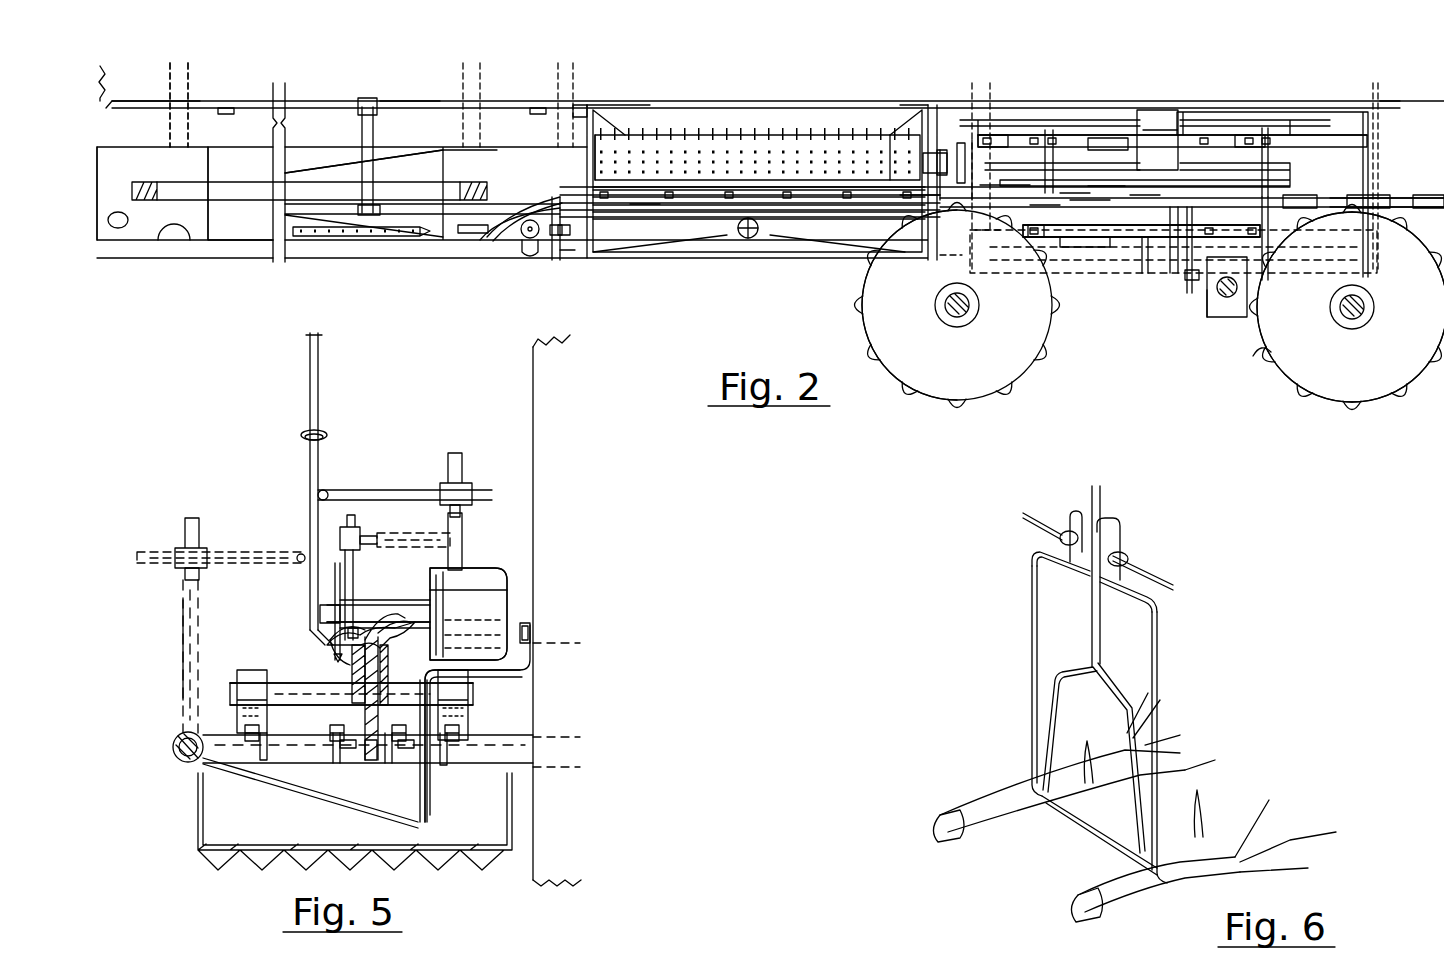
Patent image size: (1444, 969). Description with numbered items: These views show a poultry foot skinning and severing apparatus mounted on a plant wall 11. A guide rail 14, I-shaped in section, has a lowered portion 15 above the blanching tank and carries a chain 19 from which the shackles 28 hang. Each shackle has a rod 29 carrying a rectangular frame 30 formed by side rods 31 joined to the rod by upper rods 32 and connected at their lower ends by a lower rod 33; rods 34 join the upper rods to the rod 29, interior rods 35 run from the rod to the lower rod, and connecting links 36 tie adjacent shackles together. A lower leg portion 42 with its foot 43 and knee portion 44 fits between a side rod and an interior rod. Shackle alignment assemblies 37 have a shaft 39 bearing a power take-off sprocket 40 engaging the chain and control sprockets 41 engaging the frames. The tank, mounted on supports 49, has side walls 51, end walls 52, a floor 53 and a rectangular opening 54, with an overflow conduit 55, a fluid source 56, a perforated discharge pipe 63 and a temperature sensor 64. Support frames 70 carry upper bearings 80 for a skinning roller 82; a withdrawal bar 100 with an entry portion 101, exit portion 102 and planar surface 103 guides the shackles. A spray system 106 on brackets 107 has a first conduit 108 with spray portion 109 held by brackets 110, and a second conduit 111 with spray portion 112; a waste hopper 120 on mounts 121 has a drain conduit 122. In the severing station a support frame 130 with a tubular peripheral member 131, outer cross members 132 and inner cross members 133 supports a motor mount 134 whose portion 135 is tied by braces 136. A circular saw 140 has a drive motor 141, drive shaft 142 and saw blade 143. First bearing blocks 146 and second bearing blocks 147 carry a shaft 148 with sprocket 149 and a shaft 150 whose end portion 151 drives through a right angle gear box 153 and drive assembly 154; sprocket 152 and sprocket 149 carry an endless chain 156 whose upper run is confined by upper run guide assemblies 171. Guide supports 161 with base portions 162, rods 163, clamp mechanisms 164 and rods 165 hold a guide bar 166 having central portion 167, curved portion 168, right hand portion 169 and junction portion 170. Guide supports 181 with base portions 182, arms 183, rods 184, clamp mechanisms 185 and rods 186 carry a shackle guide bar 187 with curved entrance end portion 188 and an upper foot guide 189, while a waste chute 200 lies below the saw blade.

In FIG. 2, the wall 11 is at (1400, 108).
In FIG. 5, the wall 11 is at (533, 430).
In FIG. 2, the guide rail 14 is at (173, 184).
In FIG. 2, the lowered portion 15 is at (237, 193).
In FIG. 2, the chain 19 is at (1381, 198).
In FIG. 2, the shackle 28 is at (836, 202).
In FIG. 5, the rod 29 is at (320, 364).
In FIG. 6, the rod 29 is at (1092, 625).
In FIG. 6, the frame 30 is at (1031, 629).
In FIG. 6, the side rod 31 is at (1155, 629).
In FIG. 6, the upper rod 32 is at (1079, 570).
In FIG. 6, the lower rod 33 is at (1077, 828).
In FIG. 6, the rod 34 is at (1071, 508).
In FIG. 6, the interior rod 35 is at (1121, 729).
In FIG. 6, the connecting link 36 is at (1028, 526).
In FIG. 2, the shackle alignment assembly 37 is at (1002, 393).
In FIG. 2, the shaft 39 is at (1345, 312).
In FIG. 2, the power take-off sprocket 40 is at (1368, 386).
In FIG. 2, the control sprocket 41 is at (1261, 360).
In FIG. 6, the lower leg portion 42 is at (1008, 793).
In FIG. 5, the foot 43 is at (384, 633).
In FIG. 6, the foot 43 is at (1181, 729).
In FIG. 6, the knee portion 44 is at (970, 832).
In FIG. 2, the support 49 is at (190, 108).
In FIG. 2, the side wall 51 is at (222, 146).
In FIG. 2, the end wall 52 is at (97, 150).
In FIG. 2, the floor 53 is at (316, 170).
In FIG. 2, the rectangular opening 54 is at (170, 240).
In FIG. 2, the overflow conduit 55 is at (118, 228).
In FIG. 2, the source 56 is at (522, 238).
In FIG. 2, the perforated discharge pipe 63 is at (372, 237).
In FIG. 2, the temperature sensor 64 is at (463, 234).
In FIG. 2, the support frame 70 is at (572, 240).
In FIG. 2, the upper bearings 80 is at (942, 150).
In FIG. 2, the skinning roller 82 is at (776, 135).
In FIG. 2, the withdrawal bar 100 is at (670, 187).
In FIG. 2, the entry portion 101 is at (560, 182).
In FIG. 2, the exit portion 102 is at (918, 198).
In FIG. 2, the planar surface 103 is at (736, 197).
In FIG. 2, the spray system 106 is at (366, 98).
In FIG. 2, the bracket 107 is at (228, 114).
In FIG. 2, the first conduit 108 is at (405, 101).
In FIG. 2, the spray portion 109 is at (746, 186).
In FIG. 2, the bracket 110 is at (888, 130).
In FIG. 2, the second conduit 111 is at (392, 205).
In FIG. 2, the spray portion 112 is at (694, 212).
In FIG. 2, the waste hopper 120 is at (749, 239).
In FIG. 2, the mount 121 is at (630, 106).
In FIG. 2, the drain conduit 122 is at (757, 236).
In FIG. 2, the support frame 130 is at (1137, 315).
In FIG. 5, the support frame 130 is at (155, 723).
In FIG. 2, the tubular peripheral member 131 is at (1141, 284).
In FIG. 5, the tubular peripheral member 131 is at (174, 757).
In FIG. 2, the outer angle iron cross member 132 is at (1108, 140).
In FIG. 5, the outer angle iron cross member 132 is at (267, 760).
In FIG. 5, the inner angle iron cross member 133 is at (343, 750).
In FIG. 5, the motor mount 134 is at (519, 675).
In FIG. 5, the portion 135 is at (428, 815).
In FIG. 2, the brace 136 is at (1133, 252).
In FIG. 5, the brace 136 is at (275, 779).
In FIG. 5, the circular saw 140 is at (518, 604).
In FIG. 5, the drive motor 141 is at (480, 610).
In FIG. 5, the drive shaft 142 is at (413, 606).
In FIG. 2, the saw blade 143 is at (1138, 198).
In FIG. 5, the saw blade 143 is at (335, 584).
In FIG. 2, the first bearing blocks 146 is at (1040, 150).
In FIG. 5, the first bearing blocks 146 is at (257, 670).
In FIG. 2, the second bearing blocks 147 is at (1218, 140).
In FIG. 2, the shaft 148 is at (1018, 160).
In FIG. 5, the shaft 148 is at (292, 697).
In FIG. 2, the sprocket 149 is at (980, 190).
In FIG. 5, the sprocket 149 is at (378, 745).
In FIG. 2, the shaft 150 is at (1228, 164).
In FIG. 2, the end portion 151 is at (1214, 307).
In FIG. 2, the sprocket 152 is at (1250, 142).
In FIG. 2, the right angle gear box 153 is at (1215, 313).
In FIG. 2, the drive assembly 154 is at (1227, 297).
In FIG. 5, the endless chain 156 is at (368, 752).
In FIG. 2, the guide support 161 is at (575, 245).
In FIG. 5, the guide support 161 is at (180, 633).
In FIG. 5, the base portion 162 is at (183, 604).
In FIG. 5, the rod 163 is at (198, 578).
In FIG. 5, the clamp mechanism 164 is at (183, 546).
In FIG. 5, the rod 165 is at (254, 553).
In FIG. 2, the guide bar 166 is at (645, 208).
In FIG. 5, the guide bar 166 is at (300, 556).
In FIG. 2, the central portion 167 is at (768, 202).
In FIG. 2, the curved portion 168 is at (490, 238).
In FIG. 2, the right hand portion 169 is at (1046, 208).
In FIG. 2, the junction portion 170 is at (988, 222).
In FIG. 2, the upper run guide assembly 171 is at (1093, 186).
In FIG. 5, the upper run guide assembly 171 is at (356, 665).
In FIG. 2, the guide support 181 is at (1050, 143).
In FIG. 5, the base portion 182 is at (463, 552).
In FIG. 5, the arm 183 is at (430, 545).
In FIG. 5, the rod 184 is at (360, 538).
In FIG. 5, the clamp mechanism 185 is at (472, 484).
In FIG. 5, the rod 186 is at (404, 491).
In FIG. 2, the shackle guide bar 187 is at (1072, 195).
In FIG. 5, the shackle guide bar 187 is at (326, 491).
In FIG. 2, the curved entrance end portion 188 is at (975, 155).
In FIG. 2, the upper foot guide 189 is at (1080, 190).
In FIG. 5, the upper foot guide 189 is at (357, 628).
In FIG. 5, the waste chute 200 is at (208, 860).